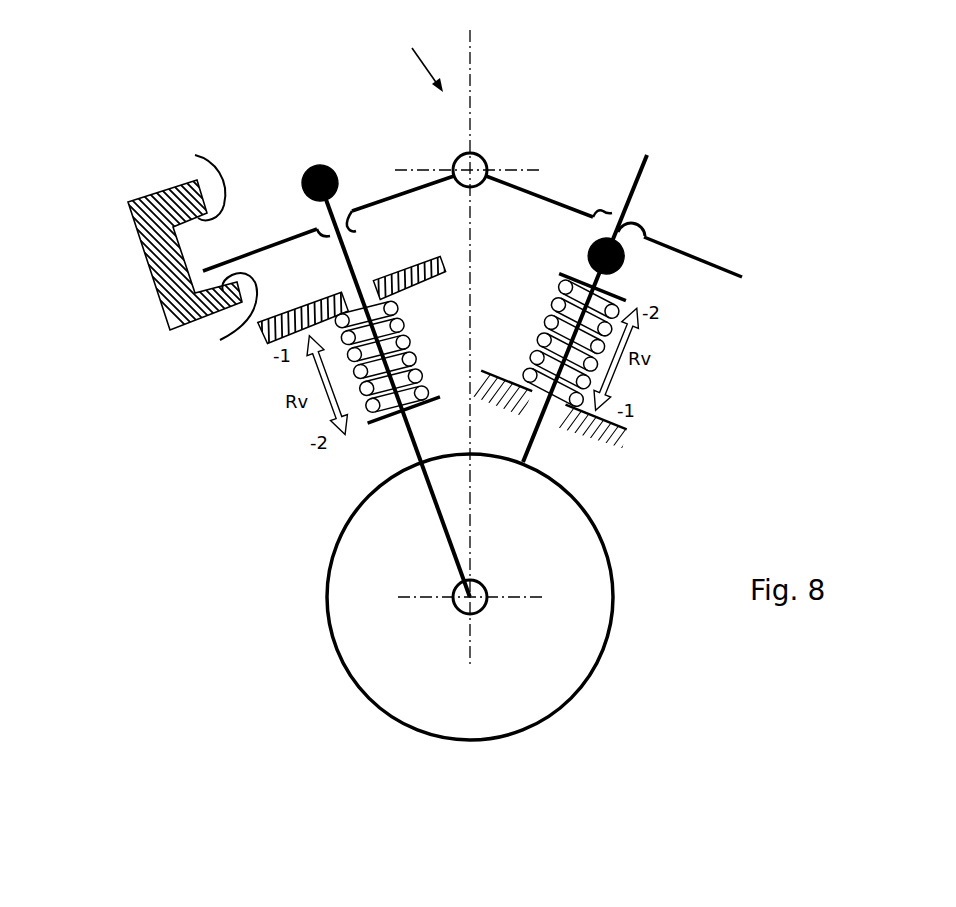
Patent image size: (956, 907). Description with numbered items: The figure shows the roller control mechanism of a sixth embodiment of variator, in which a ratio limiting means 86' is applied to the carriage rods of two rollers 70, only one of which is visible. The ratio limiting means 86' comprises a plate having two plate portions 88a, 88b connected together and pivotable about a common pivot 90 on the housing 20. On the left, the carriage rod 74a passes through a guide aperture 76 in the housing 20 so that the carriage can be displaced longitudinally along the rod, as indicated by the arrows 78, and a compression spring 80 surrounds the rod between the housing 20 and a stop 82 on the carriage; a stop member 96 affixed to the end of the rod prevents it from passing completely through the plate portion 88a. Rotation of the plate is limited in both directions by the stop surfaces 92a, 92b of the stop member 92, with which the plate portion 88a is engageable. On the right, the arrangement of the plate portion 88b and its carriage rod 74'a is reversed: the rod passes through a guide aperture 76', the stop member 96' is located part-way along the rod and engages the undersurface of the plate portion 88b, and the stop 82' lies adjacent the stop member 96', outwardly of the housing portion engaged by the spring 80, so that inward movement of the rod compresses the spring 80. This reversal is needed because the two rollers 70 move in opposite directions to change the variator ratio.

The housing 20 is at (623, 437).
The roller 70 is at (402, 703).
The straight section of roller carriage 74a is at (350, 257).
The carriage rod 74'a is at (680, 236).
The guide aperture 76 is at (386, 390).
The guide aperture 76' is at (585, 317).
The arrows 78 is at (313, 375).
The compression spring 80 is at (401, 326).
The stop 82 is at (413, 413).
The stop 82' is at (571, 261).
The ratio limiting means 86' is at (414, 59).
The plate portion 88a is at (387, 196).
The plate portion 88b is at (539, 193).
The pivot 90 is at (473, 165).
The stop member 92 is at (143, 200).
The stop surface 92a is at (193, 175).
The stop surface 92b is at (228, 320).
The stop member 96 is at (296, 164).
The stop member 96' is at (637, 261).